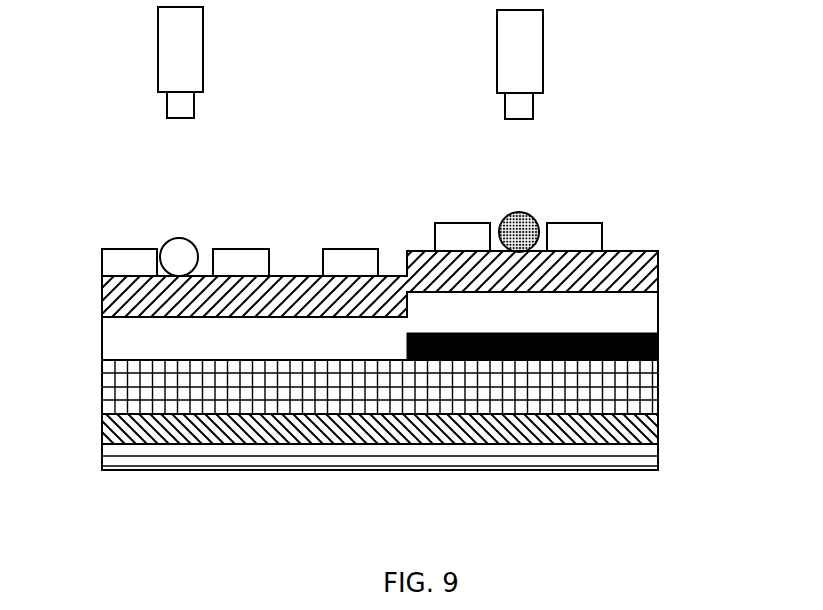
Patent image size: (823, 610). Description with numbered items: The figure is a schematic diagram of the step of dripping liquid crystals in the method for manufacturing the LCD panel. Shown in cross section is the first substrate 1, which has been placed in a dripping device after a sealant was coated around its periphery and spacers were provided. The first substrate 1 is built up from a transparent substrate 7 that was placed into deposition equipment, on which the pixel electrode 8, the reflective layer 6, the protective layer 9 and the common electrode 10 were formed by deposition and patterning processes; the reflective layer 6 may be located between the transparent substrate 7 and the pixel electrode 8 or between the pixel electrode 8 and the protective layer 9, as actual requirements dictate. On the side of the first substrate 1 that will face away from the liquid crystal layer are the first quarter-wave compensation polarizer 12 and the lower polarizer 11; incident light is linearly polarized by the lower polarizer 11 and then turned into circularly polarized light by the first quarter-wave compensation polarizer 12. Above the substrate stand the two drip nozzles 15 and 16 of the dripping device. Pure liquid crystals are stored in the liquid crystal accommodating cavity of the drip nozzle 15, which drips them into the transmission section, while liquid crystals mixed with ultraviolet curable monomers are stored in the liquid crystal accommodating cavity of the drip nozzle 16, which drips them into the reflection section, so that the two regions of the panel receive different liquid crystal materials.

The first substrate 1 is at (733, 295).
The reflective layer 6 is at (658, 349).
The transparent substrate 7 is at (102, 383).
The pixel electrode 8 is at (102, 335).
The protective layer 9 is at (658, 273).
The common electrode 10 is at (102, 263).
The lower polarizer 11 is at (102, 456).
The first λ/4 compensation polarizer 12 is at (658, 432).
The drip nozzle 15 is at (203, 50).
The drip nozzle 16 is at (543, 52).